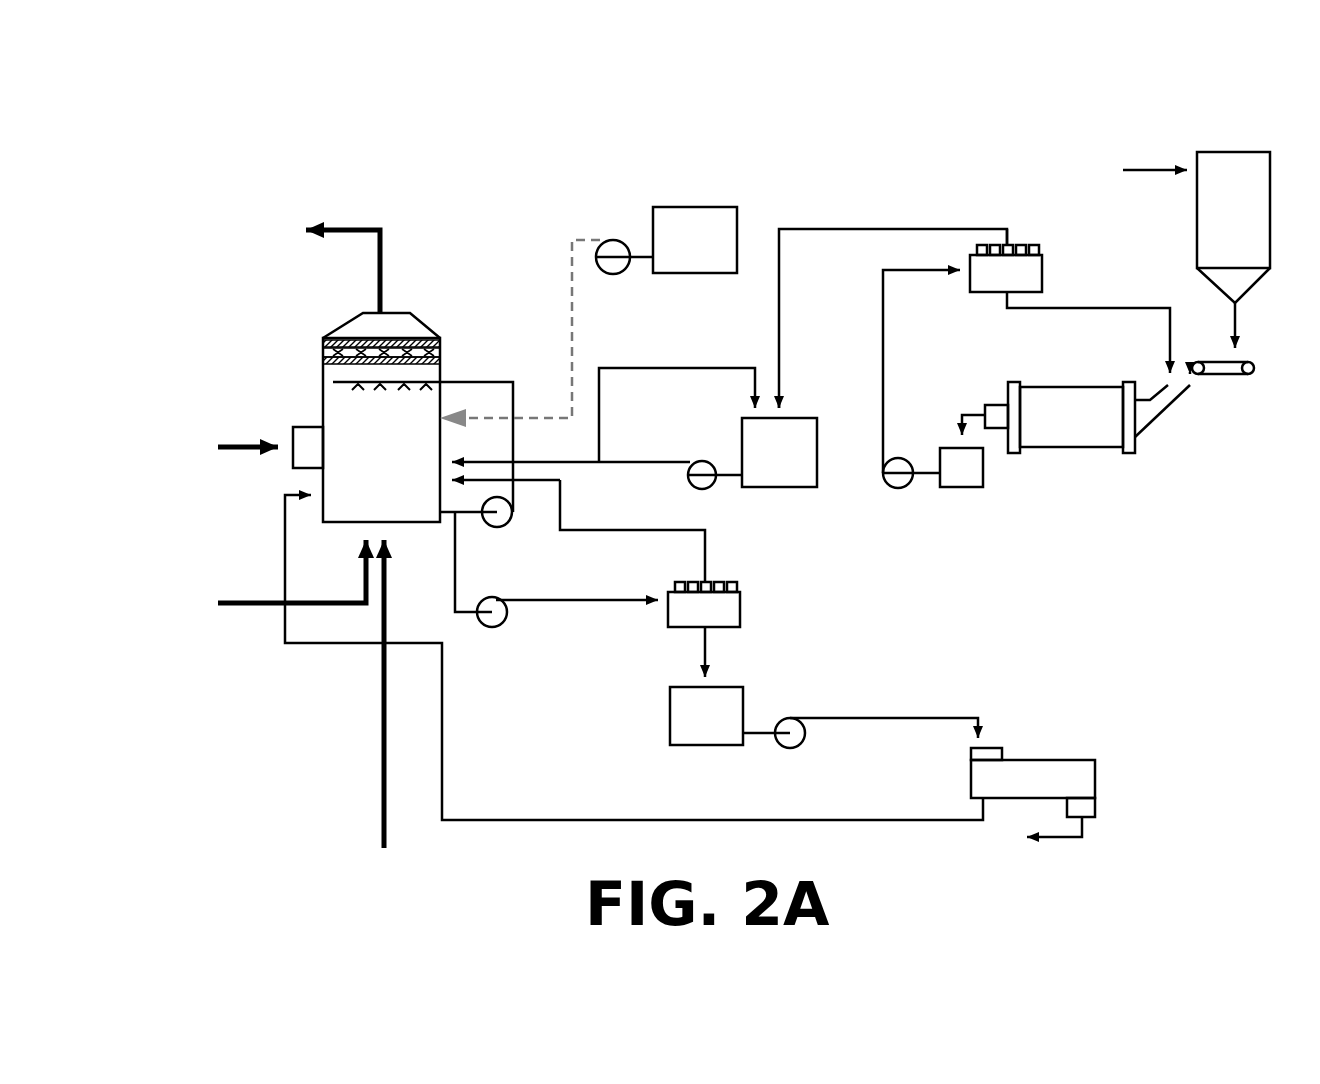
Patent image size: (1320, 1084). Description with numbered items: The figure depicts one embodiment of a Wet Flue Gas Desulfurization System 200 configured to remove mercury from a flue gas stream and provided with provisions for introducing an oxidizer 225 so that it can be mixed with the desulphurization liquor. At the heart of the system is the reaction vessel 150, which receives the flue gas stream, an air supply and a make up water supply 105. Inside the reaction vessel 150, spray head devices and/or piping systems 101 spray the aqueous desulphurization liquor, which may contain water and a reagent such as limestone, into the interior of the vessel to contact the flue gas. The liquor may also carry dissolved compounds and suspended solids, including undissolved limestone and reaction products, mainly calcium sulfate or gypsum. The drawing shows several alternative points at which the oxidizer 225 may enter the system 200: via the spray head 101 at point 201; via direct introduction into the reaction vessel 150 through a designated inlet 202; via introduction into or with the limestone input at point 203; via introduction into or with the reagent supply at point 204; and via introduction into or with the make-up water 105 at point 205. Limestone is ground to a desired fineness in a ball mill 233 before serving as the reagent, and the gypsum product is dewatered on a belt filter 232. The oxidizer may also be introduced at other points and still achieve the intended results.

The Wet Flue Gas Desulfurization System 200 is at (214, 180).
The reaction vessel 150 is at (354, 314).
The spray head devices and/or piping systems 101 is at (330, 394).
The oxidizer introduction via spray head 201 is at (510, 362).
The designated inlet 202 is at (447, 434).
The oxidizer 225 is at (668, 282).
The oxidizer introduction via reagent supply 204 is at (756, 350).
The oxidizer introduction via limestone input 203 is at (1184, 198).
The ball mill 233 is at (1064, 439).
The belt filter 232 is at (1084, 768).
The oxidizer introduction via make-up water 205 is at (362, 758).
The make up water supply 105 is at (326, 877).